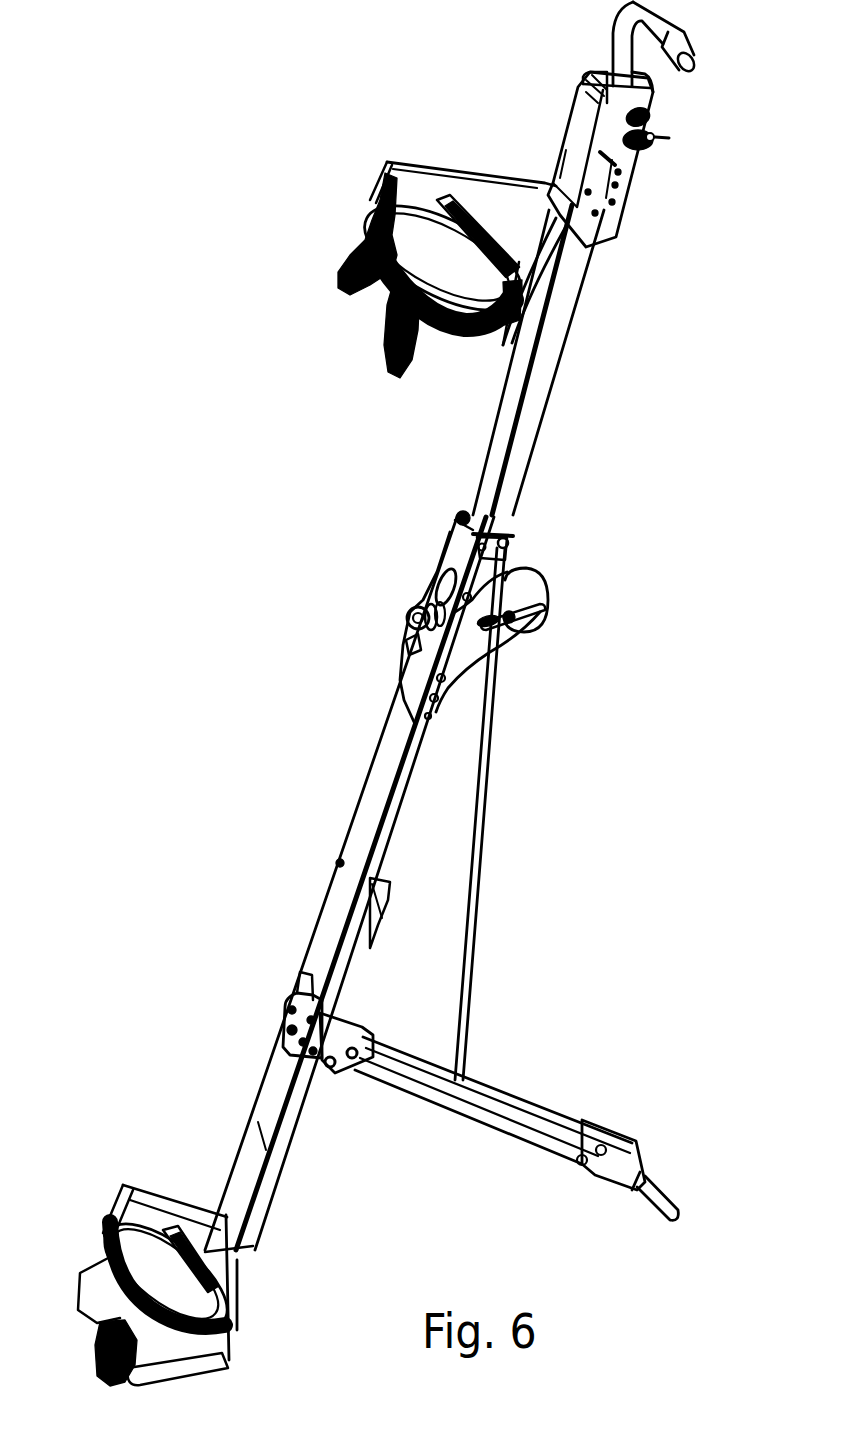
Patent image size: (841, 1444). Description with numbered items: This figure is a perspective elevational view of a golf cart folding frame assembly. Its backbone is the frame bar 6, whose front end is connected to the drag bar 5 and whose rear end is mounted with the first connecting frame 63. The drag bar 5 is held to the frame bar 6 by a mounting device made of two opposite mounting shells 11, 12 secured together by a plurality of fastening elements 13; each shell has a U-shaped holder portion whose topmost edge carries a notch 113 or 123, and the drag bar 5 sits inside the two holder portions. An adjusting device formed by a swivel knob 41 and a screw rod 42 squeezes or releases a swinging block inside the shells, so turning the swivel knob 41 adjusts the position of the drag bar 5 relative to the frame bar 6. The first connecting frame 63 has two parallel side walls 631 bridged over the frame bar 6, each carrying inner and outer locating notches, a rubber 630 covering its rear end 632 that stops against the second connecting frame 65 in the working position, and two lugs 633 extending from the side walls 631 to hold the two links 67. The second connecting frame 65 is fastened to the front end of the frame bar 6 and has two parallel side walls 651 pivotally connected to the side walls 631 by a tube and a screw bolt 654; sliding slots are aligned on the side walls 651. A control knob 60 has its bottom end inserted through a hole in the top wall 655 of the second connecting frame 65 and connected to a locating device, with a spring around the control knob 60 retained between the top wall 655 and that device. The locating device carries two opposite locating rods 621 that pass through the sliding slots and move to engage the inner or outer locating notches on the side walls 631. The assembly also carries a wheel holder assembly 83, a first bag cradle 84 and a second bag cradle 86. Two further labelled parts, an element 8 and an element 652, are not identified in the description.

The drag bar 5 is at (612, 40).
The notch 123 is at (600, 78).
The notch 113 is at (645, 76).
The mounting shell 12 is at (562, 153).
The screw rod 42 is at (661, 139).
The swivel knob 41 is at (648, 150).
The mounting shell 11 is at (622, 175).
The fastening elements 13 is at (623, 185).
The first bag cradle 84 is at (380, 176).
The frame bar 6 is at (466, 470).
The first connecting frame 63 is at (456, 518).
The lugs 633 is at (510, 538).
The rubber 630 is at (440, 568).
The rear end 632 is at (438, 580).
The parallel side walls 631 is at (537, 570).
The washer 652 is at (418, 604).
The parallel side walls 651 is at (548, 601).
The control knob 60 is at (407, 620).
The top wall 655 is at (410, 642).
The screw bolt 654 is at (516, 624).
The second connecting frame 65 is at (405, 663).
The locating rods 621 is at (494, 650).
The lower frame tube 8 is at (380, 756).
The links 67 is at (492, 838).
The wheel holder assembly 83 is at (285, 1030).
The second bag cradle 86 is at (168, 1198).